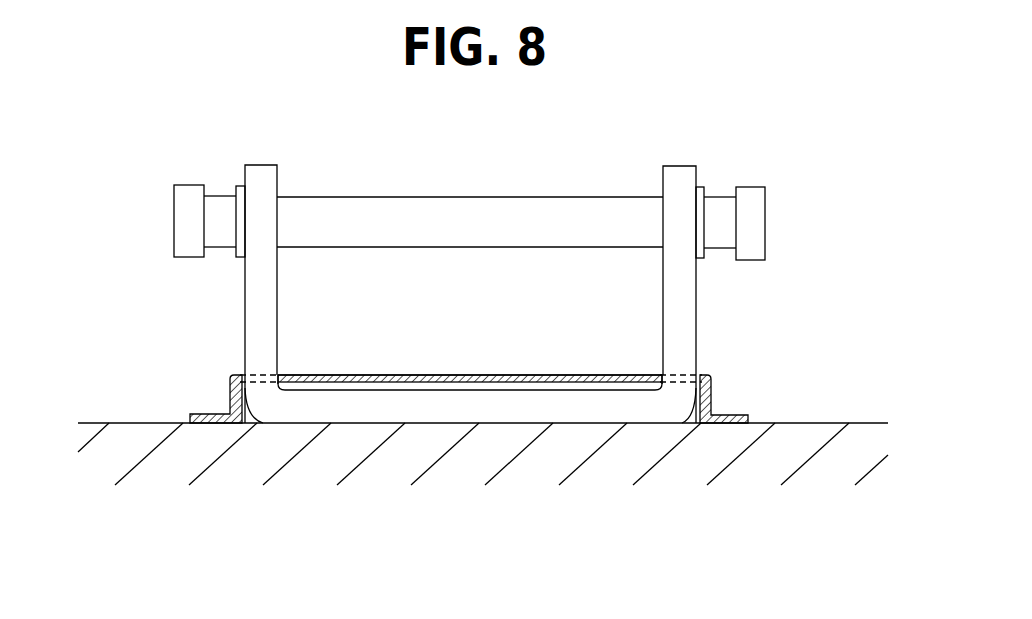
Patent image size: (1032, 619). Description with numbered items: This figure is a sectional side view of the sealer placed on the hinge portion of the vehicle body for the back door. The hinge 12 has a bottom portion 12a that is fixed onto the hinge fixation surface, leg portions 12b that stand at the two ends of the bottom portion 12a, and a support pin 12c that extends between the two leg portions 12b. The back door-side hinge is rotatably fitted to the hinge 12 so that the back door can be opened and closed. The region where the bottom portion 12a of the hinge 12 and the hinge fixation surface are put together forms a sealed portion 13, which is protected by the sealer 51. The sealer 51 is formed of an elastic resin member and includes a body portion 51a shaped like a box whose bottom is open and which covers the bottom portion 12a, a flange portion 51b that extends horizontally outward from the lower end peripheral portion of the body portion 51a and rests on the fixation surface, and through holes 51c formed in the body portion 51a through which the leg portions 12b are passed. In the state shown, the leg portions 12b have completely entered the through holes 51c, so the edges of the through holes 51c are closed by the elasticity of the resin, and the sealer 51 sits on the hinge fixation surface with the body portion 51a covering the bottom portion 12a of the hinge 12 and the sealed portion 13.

The hinge 12 is at (742, 152).
The bottom portion 12a is at (457, 413).
The leg portions 12b is at (262, 308).
The support pin 12c is at (364, 212).
The sealed portion 13 is at (252, 420).
The sealer 51 is at (576, 364).
The body portion 51a is at (456, 375).
The flange portion 51b is at (212, 413).
The through holes 51c is at (280, 374).